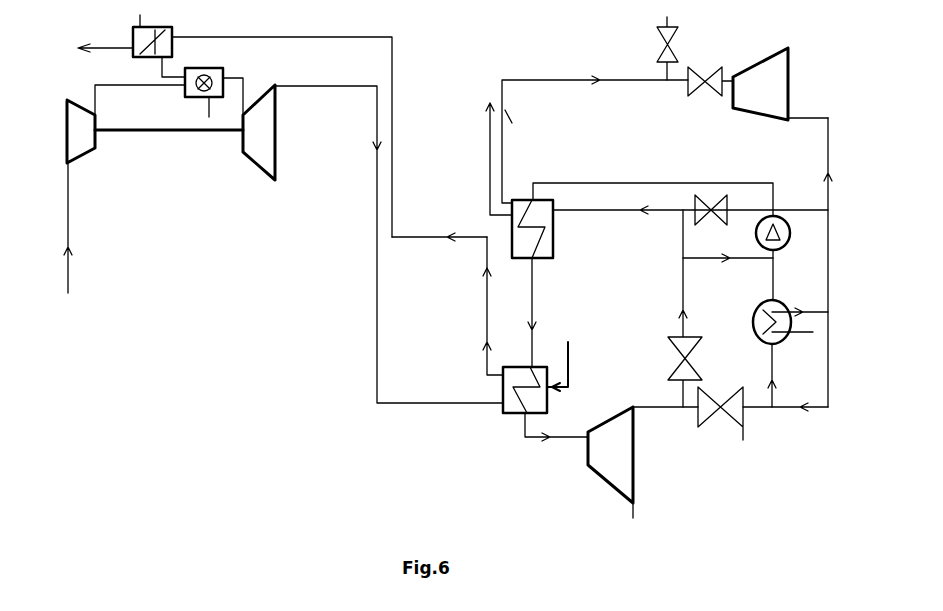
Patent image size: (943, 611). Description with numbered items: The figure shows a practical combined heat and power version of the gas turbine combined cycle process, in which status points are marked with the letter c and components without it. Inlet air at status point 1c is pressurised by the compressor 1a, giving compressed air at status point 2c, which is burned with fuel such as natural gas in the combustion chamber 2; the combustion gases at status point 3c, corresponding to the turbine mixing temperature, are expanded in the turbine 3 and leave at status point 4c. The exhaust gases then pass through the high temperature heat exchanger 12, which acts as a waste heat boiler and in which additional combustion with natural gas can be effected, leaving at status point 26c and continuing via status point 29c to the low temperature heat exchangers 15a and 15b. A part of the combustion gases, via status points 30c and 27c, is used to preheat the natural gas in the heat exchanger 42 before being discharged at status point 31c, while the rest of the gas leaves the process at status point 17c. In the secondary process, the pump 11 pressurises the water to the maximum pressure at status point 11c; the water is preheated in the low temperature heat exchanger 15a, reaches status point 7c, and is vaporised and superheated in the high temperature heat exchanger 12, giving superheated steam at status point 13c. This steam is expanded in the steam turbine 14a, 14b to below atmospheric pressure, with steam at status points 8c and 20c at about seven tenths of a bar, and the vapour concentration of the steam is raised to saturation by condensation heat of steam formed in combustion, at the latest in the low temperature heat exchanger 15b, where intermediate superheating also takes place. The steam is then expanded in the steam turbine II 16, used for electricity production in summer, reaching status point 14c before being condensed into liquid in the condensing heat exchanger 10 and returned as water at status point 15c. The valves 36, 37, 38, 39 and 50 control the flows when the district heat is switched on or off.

The compressor 1a is at (80, 163).
The status point 1c is at (65, 280).
The combustion chamber 2 is at (204, 96).
The status point 2c is at (93, 97).
The turbine 3 is at (275, 150).
The status point 3c is at (243, 116).
The status point 4c is at (308, 86).
The status point 7c is at (530, 312).
The status point 8c is at (503, 172).
The condensing heat exchanger 10 is at (758, 303).
The pump 11 is at (775, 210).
The status point 11c is at (775, 182).
The high temperature heat exchanger 12 is at (507, 413).
The status point 13c is at (533, 437).
The steam turbine 14a is at (610, 474).
The steam turbine 14b is at (653, 465).
The status point 14c is at (777, 358).
The low temperature heat exchanger 15a is at (553, 230).
The low temperature heat exchanger 15b is at (555, 257).
The status point 15c is at (815, 273).
The steam turbine II 16 is at (733, 109).
The status point 17c is at (488, 169).
The status point 20c is at (675, 407).
The status point 26c is at (485, 298).
The status point 27c is at (170, 73).
The status point 29c is at (487, 263).
The status point 30c is at (395, 82).
The status point 31c is at (125, 36).
The valve 36 is at (668, 352).
The valve 37 is at (728, 429).
The valve 38 is at (673, 28).
The valve 39 is at (688, 87).
The heat exchanger 42 is at (127, 68).
The valve 50 is at (690, 220).